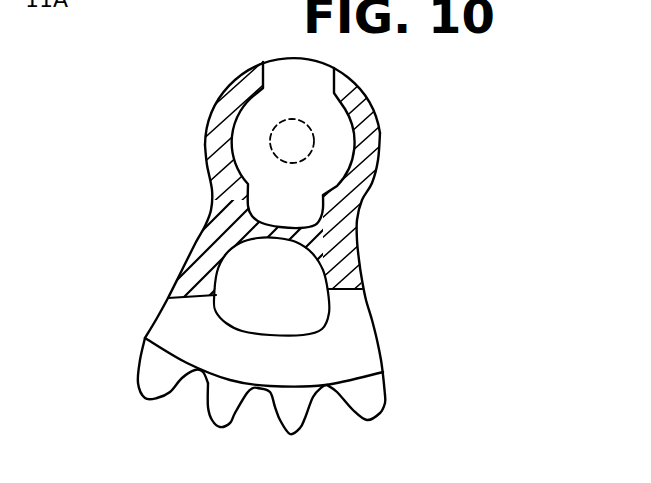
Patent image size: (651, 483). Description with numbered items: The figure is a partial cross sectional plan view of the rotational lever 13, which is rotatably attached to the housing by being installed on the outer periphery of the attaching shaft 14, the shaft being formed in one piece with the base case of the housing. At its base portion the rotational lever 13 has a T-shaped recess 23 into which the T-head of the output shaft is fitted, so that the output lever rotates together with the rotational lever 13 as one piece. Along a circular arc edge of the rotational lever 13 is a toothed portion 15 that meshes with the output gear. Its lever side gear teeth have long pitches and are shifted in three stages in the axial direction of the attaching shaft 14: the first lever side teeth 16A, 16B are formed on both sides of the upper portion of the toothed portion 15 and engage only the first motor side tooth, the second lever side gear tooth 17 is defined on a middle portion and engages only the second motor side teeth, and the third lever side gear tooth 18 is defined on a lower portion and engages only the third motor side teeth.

The rotational lever 13 is at (233, 223).
The attaching shaft 14 is at (313, 135).
The toothed portion 15 is at (325, 383).
The first lever side gear tooth 16A is at (148, 368).
The first lever side gear tooth 16B is at (367, 401).
The second lever side gear tooth 17 is at (227, 410).
The third lever side gear tooth 18 is at (292, 417).
The T-shaped recess 23 is at (255, 120).